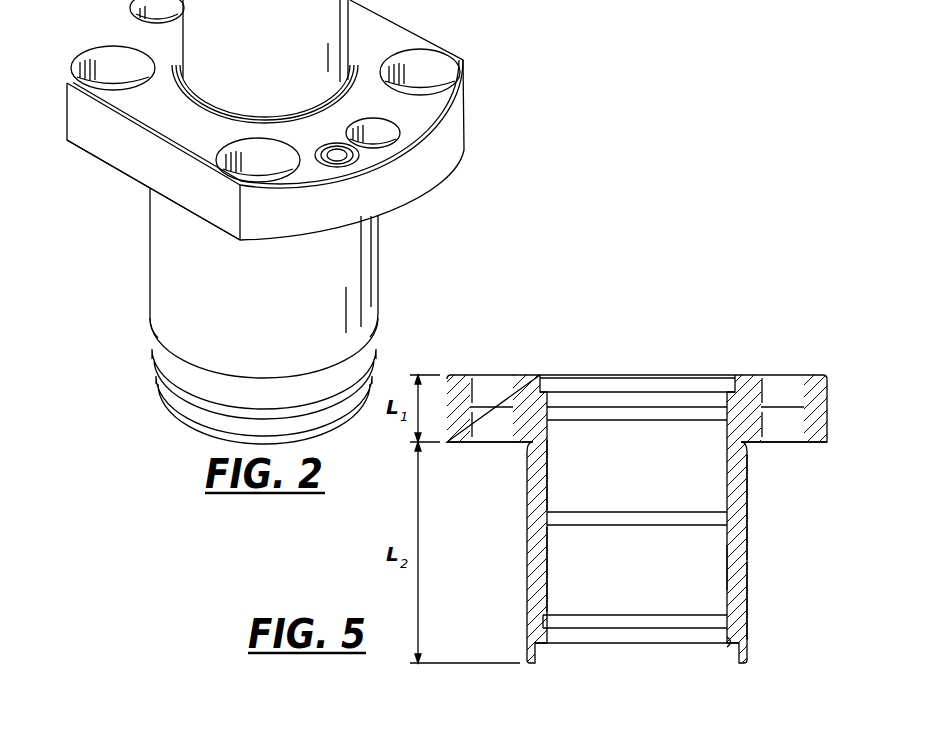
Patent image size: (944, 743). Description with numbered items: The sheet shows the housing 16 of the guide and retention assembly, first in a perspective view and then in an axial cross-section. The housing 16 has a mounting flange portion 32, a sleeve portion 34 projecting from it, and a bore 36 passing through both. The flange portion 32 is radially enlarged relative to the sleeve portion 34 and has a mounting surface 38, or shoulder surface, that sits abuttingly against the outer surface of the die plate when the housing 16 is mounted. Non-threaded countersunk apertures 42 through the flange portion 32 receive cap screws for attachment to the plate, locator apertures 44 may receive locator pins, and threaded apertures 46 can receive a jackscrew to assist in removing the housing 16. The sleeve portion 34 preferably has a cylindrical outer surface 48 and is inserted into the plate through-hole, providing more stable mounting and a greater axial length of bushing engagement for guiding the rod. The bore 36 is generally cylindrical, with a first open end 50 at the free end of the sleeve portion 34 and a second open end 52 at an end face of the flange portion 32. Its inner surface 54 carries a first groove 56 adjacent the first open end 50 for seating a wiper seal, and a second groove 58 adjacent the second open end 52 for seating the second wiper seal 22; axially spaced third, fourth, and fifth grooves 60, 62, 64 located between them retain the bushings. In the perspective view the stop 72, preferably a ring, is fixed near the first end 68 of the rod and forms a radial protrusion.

In FIG. 2, the housing 16 is at (121, 178).
In FIG. 5, the housing 16 is at (747, 532).
In FIG. 2, the second wiper seal 22 is at (318, 100).
In FIG. 2, the mounting flange portion 32 is at (450, 140).
In FIG. 5, the mounting flange portion 32 is at (820, 392).
In FIG. 2, the sleeve portion 34 is at (357, 252).
In FIG. 5, the sleeve portion 34 is at (737, 567).
In FIG. 5, the bore 36 is at (557, 574).
In FIG. 2, the mounting surface 38 is at (103, 165).
In FIG. 5, the mounting surface 38 is at (815, 442).
In FIG. 2, the countersunk apertures 42 is at (107, 62).
In FIG. 5, the countersunk apertures 42 is at (513, 390).
In FIG. 2, the locator apertures 44 is at (378, 130).
In FIG. 2, the threaded apertures 46 is at (336, 148).
In FIG. 2, the cylindrical outer surface 48 is at (160, 290).
In FIG. 5, the cylindrical outer surface 48 is at (746, 600).
In FIG. 5, the first open end 50 is at (730, 672).
In FIG. 5, the second open end 52 is at (717, 377).
In FIG. 5, the inner surface 54 is at (557, 480).
In FIG. 5, the first groove 56 is at (733, 640).
In FIG. 5, the second groove 58 is at (727, 390).
In FIG. 5, the third groove 60 is at (547, 618).
In FIG. 5, the fourth groove 62 is at (547, 513).
In FIG. 5, the fifth groove 64 is at (547, 417).
In FIG. 2, the first end 68 is at (212, 378).
In FIG. 2, the stop 72 is at (212, 412).